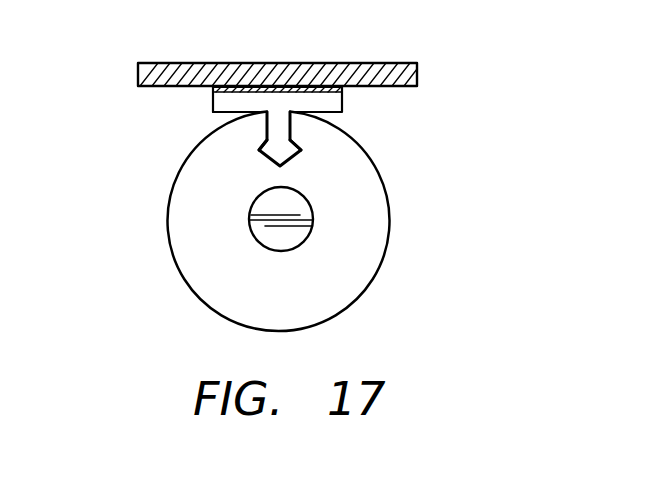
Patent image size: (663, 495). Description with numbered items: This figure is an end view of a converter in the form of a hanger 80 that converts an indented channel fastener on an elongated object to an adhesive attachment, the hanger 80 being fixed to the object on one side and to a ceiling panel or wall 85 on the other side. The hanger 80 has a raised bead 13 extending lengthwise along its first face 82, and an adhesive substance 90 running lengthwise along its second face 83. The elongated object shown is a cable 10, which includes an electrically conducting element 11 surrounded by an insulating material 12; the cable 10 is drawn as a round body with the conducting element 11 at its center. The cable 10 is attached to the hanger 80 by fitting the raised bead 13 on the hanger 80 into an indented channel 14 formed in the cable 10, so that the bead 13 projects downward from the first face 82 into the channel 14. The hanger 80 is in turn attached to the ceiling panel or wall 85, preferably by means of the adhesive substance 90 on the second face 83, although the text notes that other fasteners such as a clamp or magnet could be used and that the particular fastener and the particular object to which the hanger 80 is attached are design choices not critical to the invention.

The ceiling panel or wall 85 is at (417, 76).
The adhesive substance 90 is at (213, 88).
The second face 83 is at (342, 97).
The first face 82 is at (340, 113).
The hanger 80 is at (216, 120).
The cable 10 is at (179, 177).
The insulating material 12 is at (192, 236).
The indented channel 14 is at (263, 163).
The raised bead 13 is at (305, 163).
The electrically conducting element 11 is at (270, 236).